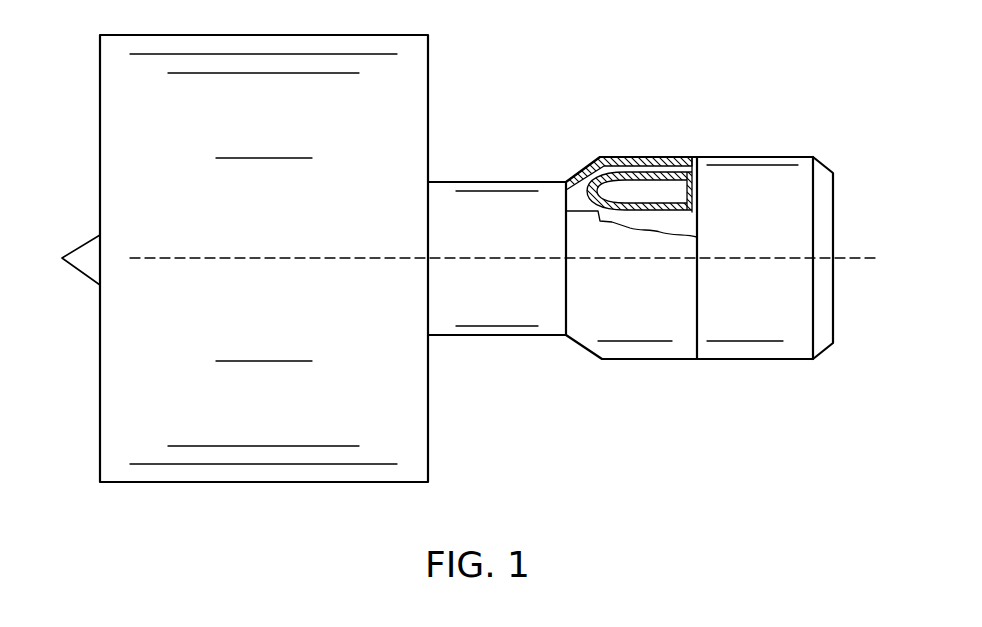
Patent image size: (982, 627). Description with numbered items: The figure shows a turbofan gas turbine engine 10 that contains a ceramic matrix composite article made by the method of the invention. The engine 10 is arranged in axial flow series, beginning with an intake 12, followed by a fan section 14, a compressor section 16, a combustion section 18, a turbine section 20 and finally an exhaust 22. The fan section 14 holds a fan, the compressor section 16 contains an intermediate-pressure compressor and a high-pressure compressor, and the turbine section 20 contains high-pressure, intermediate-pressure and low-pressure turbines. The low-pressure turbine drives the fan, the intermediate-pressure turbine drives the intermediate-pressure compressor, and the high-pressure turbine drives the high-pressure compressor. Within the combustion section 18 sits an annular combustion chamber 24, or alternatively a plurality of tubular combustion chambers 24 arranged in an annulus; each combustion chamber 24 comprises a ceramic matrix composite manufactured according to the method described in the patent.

The turbofan gas turbine engine 10 is at (634, 84).
The intake 12 is at (100, 173).
The fan section 14 is at (259, 456).
The compressor section 16 is at (491, 313).
The combustion section 18 is at (628, 320).
The turbine section 20 is at (743, 323).
The exhaust 22 is at (833, 325).
The combustion chamber 24 is at (651, 168).